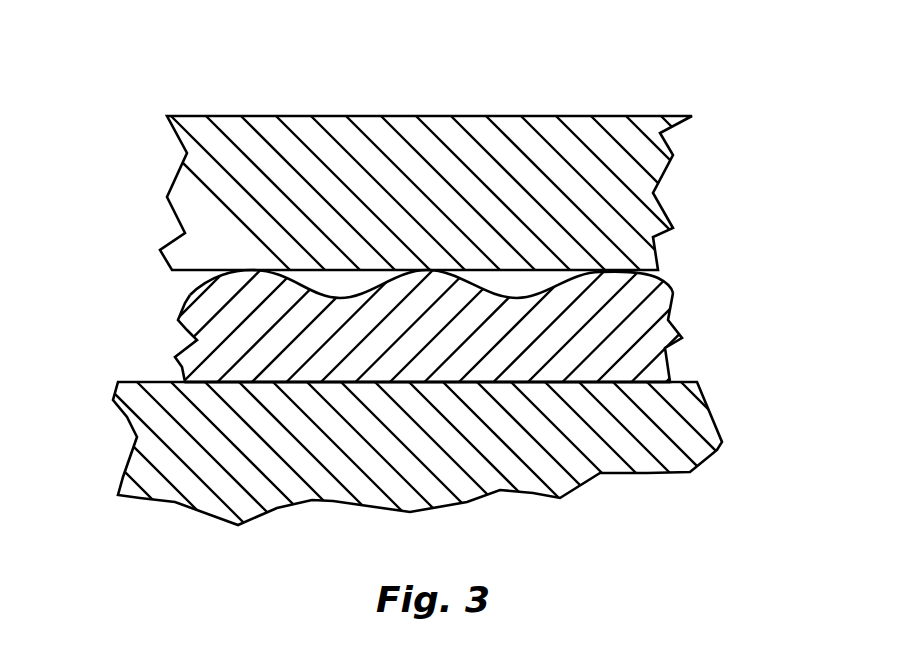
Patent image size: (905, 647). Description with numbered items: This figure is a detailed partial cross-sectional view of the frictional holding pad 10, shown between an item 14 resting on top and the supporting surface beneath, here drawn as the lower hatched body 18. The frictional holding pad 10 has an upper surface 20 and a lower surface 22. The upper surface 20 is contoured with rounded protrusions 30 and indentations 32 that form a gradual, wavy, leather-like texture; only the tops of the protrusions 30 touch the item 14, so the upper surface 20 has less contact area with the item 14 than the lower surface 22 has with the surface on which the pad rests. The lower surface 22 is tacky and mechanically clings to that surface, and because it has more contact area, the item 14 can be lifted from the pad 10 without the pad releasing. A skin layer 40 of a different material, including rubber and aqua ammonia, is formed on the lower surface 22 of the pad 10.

The frictional holding pad 10 is at (698, 308).
The item 14 is at (690, 138).
The lower substrate layer 18 is at (147, 381).
The upper surface 20 is at (660, 278).
The lower surface 22 is at (608, 383).
The protrusions 30 is at (252, 278).
The indentations 32 is at (338, 282).
The skin layer 40 is at (497, 383).